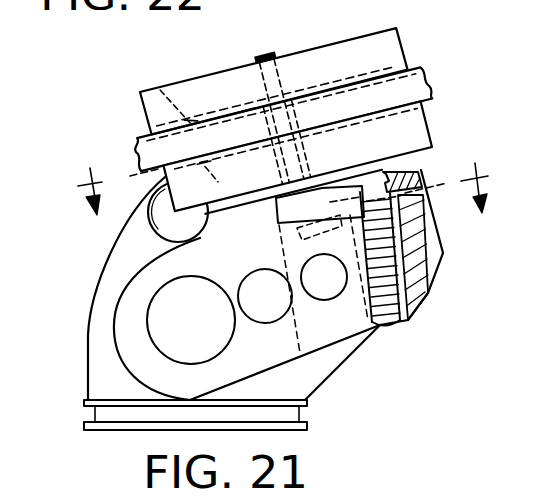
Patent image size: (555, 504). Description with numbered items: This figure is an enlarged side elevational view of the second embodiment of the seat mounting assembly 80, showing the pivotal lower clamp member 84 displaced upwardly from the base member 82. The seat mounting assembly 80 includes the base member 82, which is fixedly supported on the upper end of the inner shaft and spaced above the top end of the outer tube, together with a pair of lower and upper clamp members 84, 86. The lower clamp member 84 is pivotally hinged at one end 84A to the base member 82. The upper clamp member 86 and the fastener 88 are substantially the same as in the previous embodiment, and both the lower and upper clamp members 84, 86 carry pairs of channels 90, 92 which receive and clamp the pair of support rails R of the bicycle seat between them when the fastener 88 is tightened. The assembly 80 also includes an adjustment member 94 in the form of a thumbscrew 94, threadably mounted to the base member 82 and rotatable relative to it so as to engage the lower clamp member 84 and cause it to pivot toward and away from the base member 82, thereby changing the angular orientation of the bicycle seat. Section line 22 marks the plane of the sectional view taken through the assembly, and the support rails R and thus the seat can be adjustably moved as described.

The seat mounting assembly 80 is at (309, 120).
The base member 82 is at (330, 360).
The lower clamp member 84 is at (417, 132).
The end of the lower clamp member 84A is at (200, 240).
The upper clamp member 86 is at (367, 43).
The fastener 88 is at (266, 56).
The channels 90 is at (203, 169).
The channels 92 is at (160, 88).
The adjustment member 94 is at (410, 187).
The support rails R is at (427, 77).
The section line 22- 22 is at (277, 179).